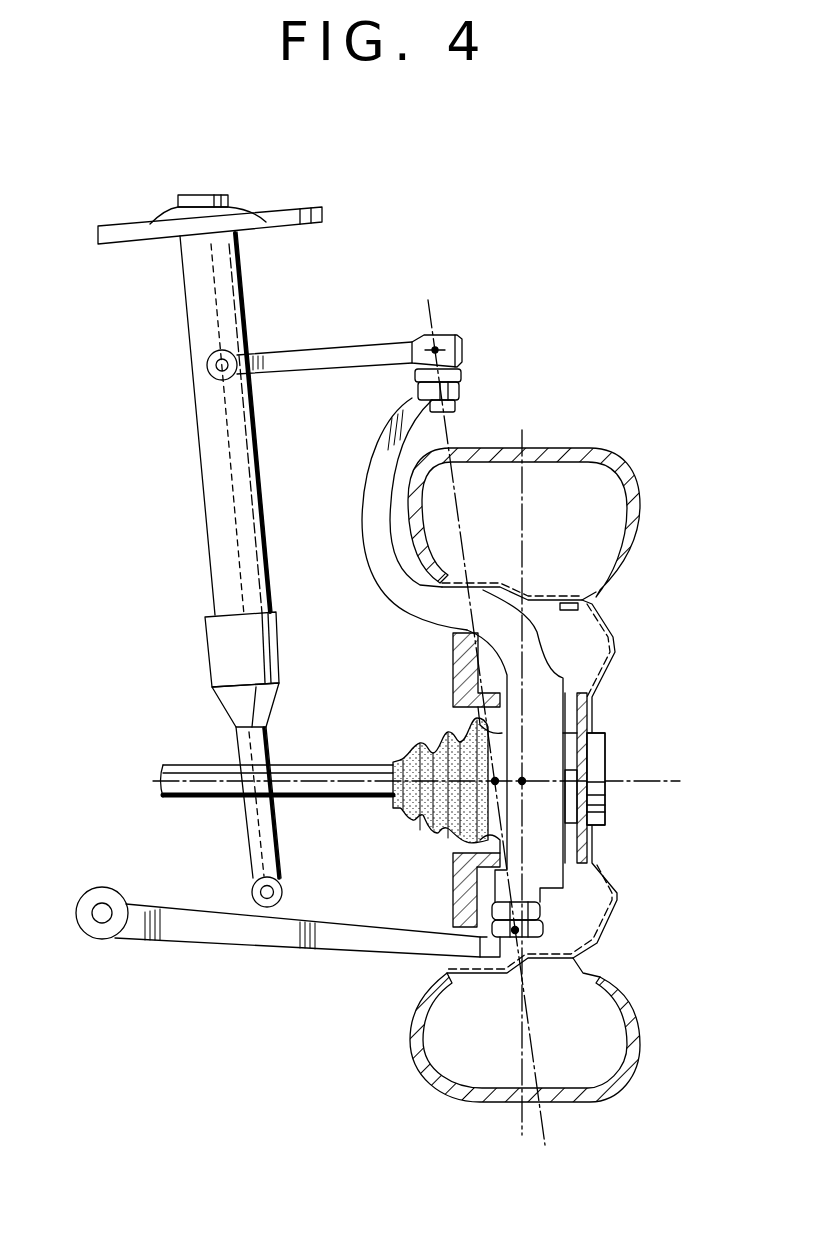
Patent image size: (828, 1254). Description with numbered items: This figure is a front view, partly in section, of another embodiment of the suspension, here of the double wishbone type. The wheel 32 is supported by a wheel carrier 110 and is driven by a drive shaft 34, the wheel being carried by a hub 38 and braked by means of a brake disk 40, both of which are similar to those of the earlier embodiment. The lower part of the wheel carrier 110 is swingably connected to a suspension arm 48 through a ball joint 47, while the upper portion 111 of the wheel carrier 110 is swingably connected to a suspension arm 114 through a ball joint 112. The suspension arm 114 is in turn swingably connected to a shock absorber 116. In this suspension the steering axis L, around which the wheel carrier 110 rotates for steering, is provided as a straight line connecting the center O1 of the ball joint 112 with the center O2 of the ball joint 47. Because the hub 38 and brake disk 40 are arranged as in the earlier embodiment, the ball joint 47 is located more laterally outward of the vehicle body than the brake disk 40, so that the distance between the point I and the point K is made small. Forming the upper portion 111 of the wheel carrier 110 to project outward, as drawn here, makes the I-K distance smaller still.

The shock absorber 116 is at (208, 503).
The suspension arm 114 is at (334, 351).
The ball joint 112 is at (463, 371).
The upper portion of the wheel carrier 111 is at (374, 447).
The wheel carrier 110 is at (553, 671).
The wheel 32 is at (608, 668).
The hub 38 is at (570, 798).
The brake disk 40 is at (453, 878).
The drive shaft 34 is at (343, 797).
The ball joint 47 is at (537, 928).
The suspension arm 48 is at (208, 935).
The center of the ball joint 112 O1 is at (436, 350).
The center of the ball joint 47 O2 is at (541, 912).
The steering axis L is at (466, 553).
The point K is at (495, 781).
The point I is at (524, 780).